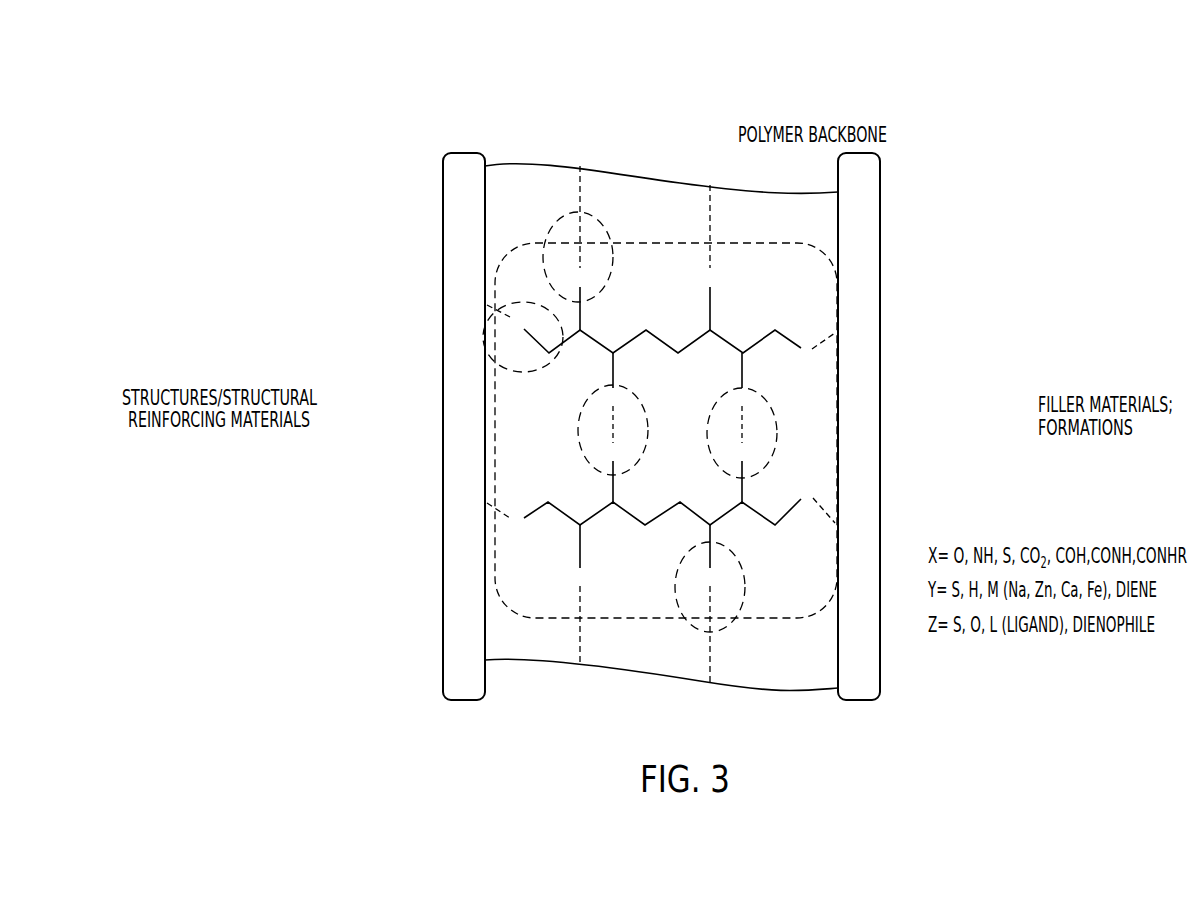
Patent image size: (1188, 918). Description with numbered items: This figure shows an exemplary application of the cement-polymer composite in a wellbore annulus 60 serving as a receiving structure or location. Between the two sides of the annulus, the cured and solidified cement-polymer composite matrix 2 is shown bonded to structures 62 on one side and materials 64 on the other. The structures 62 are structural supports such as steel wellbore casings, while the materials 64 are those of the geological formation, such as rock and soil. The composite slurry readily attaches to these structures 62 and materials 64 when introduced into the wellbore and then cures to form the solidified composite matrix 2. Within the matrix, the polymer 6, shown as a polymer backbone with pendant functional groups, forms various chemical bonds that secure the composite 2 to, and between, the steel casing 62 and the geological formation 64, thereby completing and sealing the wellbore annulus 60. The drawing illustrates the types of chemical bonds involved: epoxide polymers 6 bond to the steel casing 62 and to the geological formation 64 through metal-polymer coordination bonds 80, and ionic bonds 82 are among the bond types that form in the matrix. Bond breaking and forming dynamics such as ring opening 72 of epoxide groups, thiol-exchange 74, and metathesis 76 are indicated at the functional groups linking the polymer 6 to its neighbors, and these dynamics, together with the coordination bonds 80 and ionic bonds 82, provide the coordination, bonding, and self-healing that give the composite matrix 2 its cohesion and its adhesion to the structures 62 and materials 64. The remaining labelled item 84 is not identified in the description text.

The wellbore annulus 60 is at (268, 100).
The structures 62 is at (430, 421).
The materials 64 is at (900, 402).
The polymer 6 is at (740, 320).
The cement-polymer composite matrix 2 is at (517, 587).
The metal coordination bonds 80 is at (569, 421).
The ionic bonds 82 is at (566, 194).
The ring opening 72 is at (668, 411).
The thiol-exchange 74 is at (668, 411).
The metathesis 76 is at (668, 411).
The Y-Z bonding site 84 is at (560, 433).